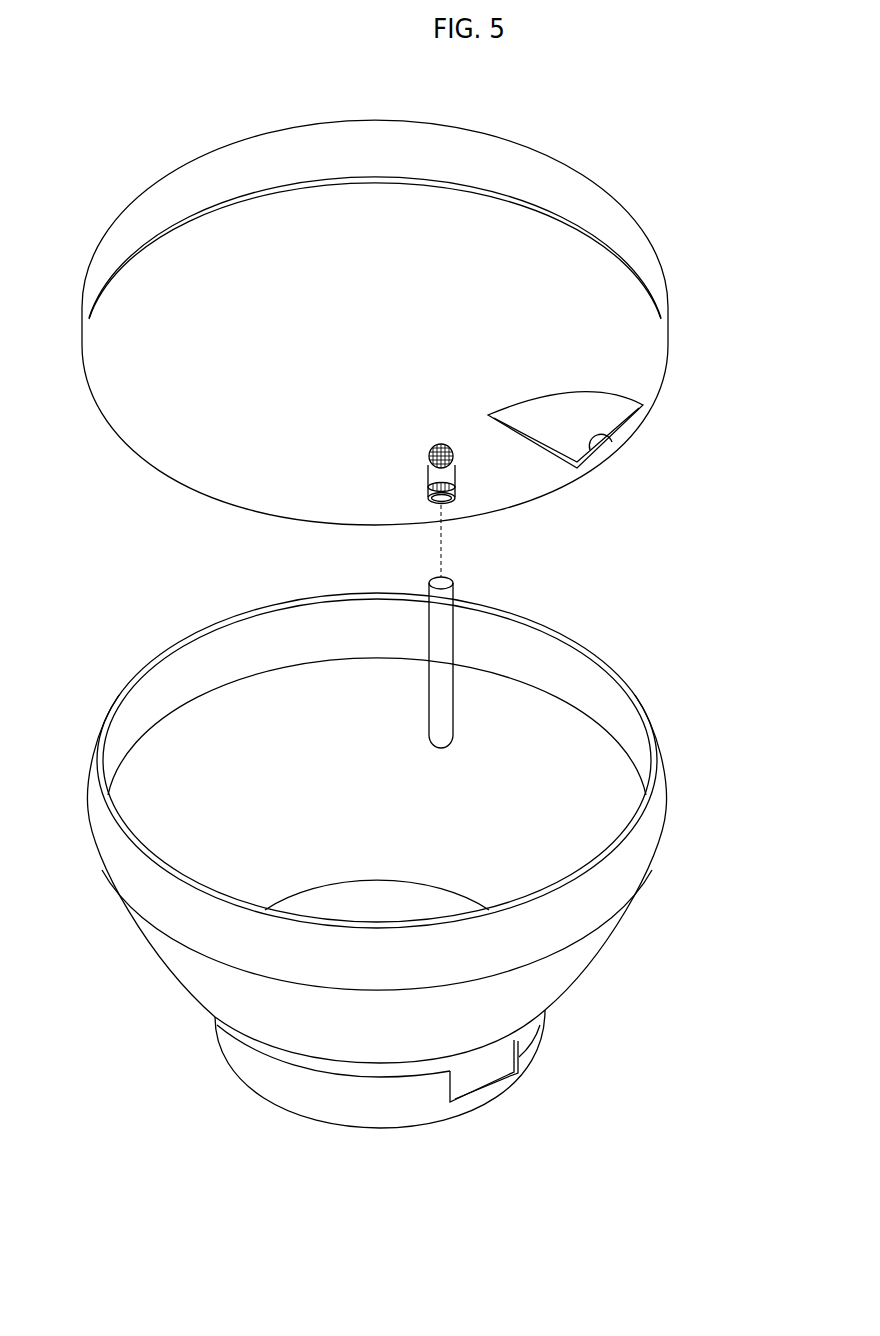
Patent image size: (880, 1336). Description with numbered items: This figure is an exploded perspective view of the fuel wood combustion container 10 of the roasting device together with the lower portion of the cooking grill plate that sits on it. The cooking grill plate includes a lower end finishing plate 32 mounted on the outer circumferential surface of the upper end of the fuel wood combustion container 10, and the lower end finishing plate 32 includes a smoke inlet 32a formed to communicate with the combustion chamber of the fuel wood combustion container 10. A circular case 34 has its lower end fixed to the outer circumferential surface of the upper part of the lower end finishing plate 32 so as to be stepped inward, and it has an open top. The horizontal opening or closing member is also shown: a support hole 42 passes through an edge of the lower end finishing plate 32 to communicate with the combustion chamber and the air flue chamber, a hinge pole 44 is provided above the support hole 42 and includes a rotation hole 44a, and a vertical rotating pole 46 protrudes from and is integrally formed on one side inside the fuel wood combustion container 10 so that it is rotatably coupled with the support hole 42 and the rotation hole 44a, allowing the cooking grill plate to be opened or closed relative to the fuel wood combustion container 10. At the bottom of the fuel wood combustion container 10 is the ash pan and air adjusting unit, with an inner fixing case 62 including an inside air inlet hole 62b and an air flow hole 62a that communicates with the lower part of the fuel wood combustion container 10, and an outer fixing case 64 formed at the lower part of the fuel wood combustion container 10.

The fuel wood combustion container 10 is at (406, 885).
The lower end finishing plate 32 is at (115, 398).
The smoke inlet 32a is at (598, 465).
The circular case 34 is at (592, 200).
The support hole 42 is at (450, 500).
The hinge pole 44 is at (451, 510).
The rotation hole 44a is at (457, 472).
The vertical rotating pole 46 is at (443, 638).
The inner fixing case 62 is at (389, 1094).
The air flow hole 62a is at (328, 910).
The inside air inlet hole 62b is at (488, 1072).
The outer fixing case 64 is at (258, 1050).